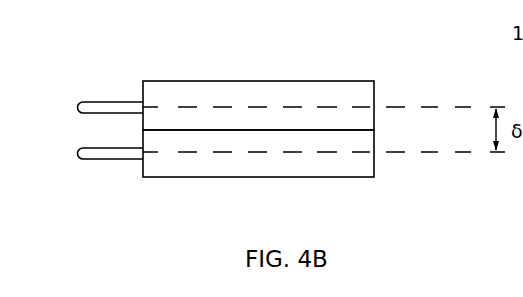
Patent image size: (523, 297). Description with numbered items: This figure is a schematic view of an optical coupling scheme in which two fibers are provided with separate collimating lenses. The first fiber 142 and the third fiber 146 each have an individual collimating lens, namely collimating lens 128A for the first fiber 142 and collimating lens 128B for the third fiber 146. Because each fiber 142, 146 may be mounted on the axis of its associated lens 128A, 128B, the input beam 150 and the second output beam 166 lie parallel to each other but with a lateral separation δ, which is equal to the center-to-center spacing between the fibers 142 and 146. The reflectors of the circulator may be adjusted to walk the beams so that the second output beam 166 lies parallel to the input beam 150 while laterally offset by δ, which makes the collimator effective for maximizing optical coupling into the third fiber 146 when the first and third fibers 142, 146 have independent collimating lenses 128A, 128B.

The collimating lens 128A is at (285, 175).
The collimating lens 128B is at (258, 83).
The first fiber 142 is at (123, 162).
The third fiber 146 is at (107, 97).
The input beam 150 is at (431, 153).
The second output beam 166 is at (424, 106).